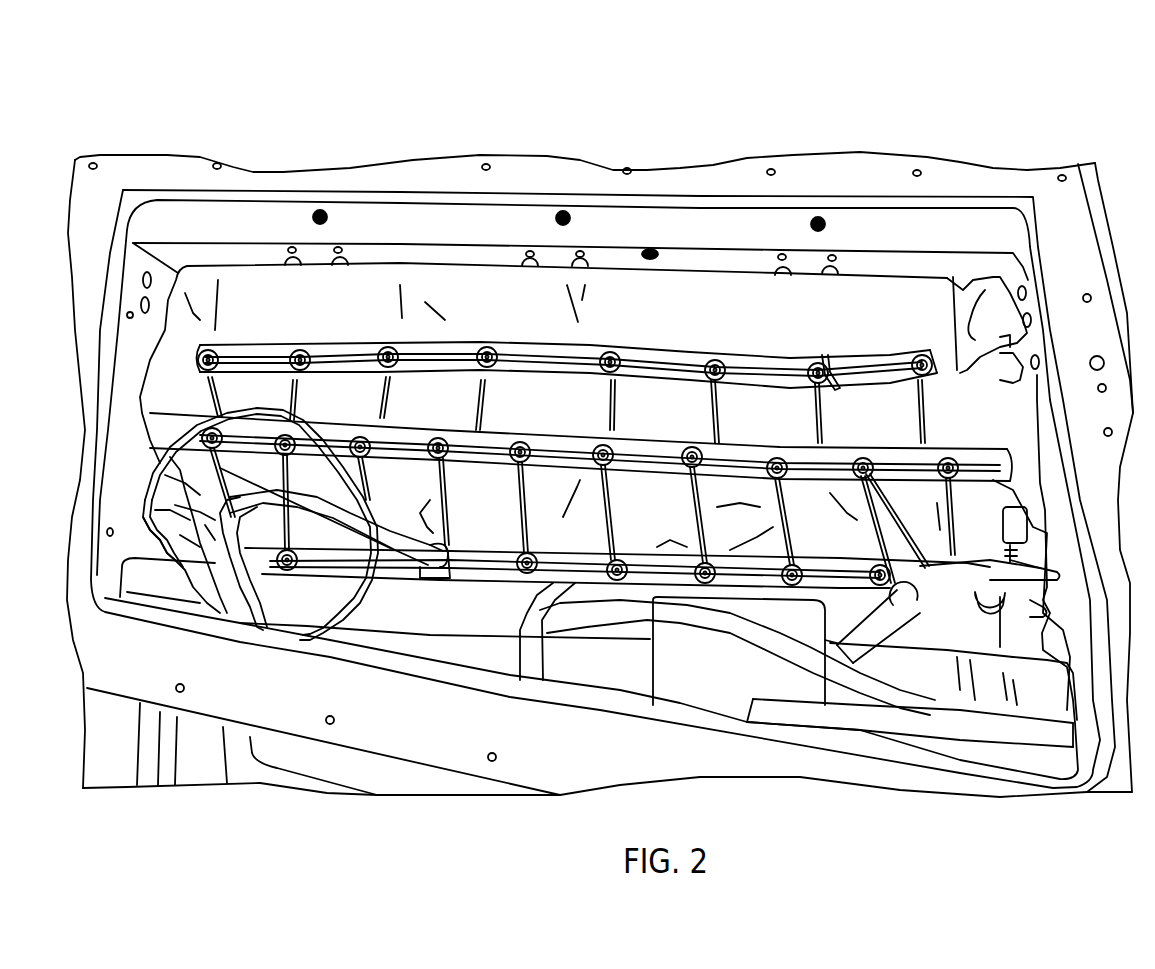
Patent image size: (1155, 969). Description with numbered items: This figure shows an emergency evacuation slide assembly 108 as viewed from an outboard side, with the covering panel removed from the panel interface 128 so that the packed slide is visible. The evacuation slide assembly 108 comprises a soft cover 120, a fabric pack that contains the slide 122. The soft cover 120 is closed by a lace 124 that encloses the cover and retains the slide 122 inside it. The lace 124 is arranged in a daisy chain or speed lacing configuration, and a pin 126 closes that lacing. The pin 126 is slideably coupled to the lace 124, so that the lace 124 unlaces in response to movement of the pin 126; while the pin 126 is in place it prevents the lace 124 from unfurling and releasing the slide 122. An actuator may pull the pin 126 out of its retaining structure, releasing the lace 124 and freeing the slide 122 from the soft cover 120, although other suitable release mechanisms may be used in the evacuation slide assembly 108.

The evacuation slide assembly 108 is at (131, 120).
The soft cover 120 is at (437, 297).
The slide 122 is at (815, 500).
The lace 124 is at (610, 493).
The pin 126 is at (828, 373).
The panel interface 128 is at (228, 222).